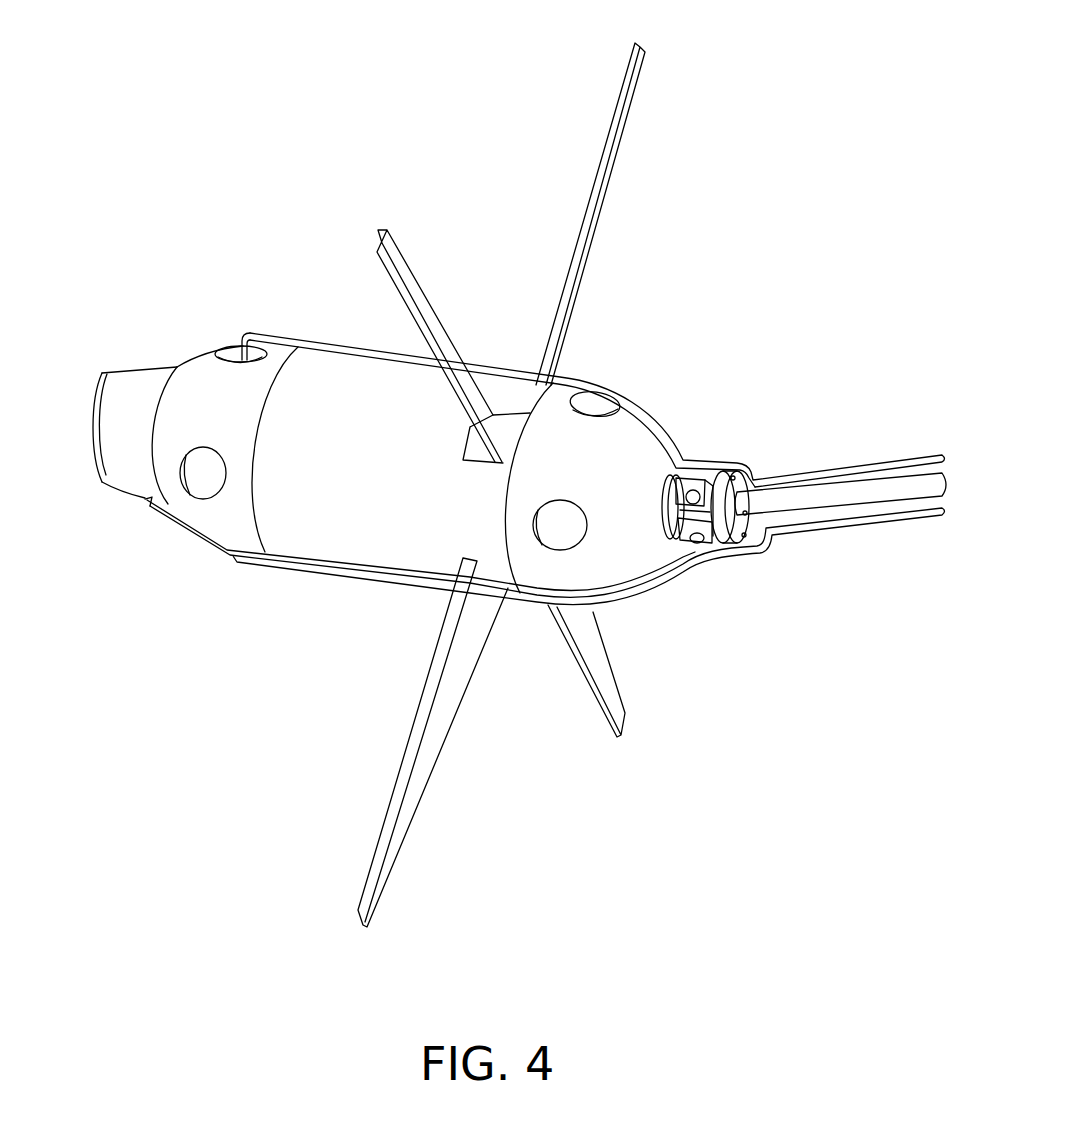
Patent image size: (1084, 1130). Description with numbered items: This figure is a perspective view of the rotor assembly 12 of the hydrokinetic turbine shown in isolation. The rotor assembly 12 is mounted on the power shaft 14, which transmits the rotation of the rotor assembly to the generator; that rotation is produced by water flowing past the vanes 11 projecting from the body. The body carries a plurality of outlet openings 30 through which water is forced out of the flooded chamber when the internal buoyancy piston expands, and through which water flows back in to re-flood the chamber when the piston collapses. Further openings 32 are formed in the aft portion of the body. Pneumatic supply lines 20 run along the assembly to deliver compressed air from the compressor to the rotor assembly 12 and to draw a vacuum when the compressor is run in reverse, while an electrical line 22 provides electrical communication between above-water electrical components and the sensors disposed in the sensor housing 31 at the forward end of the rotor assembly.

The rotor assembly 12 is at (457, 150).
The vanes 11 is at (427, 735).
The power shaft 14 is at (825, 493).
The pneumatic supply lines 20 is at (325, 345).
The electrical line 22 is at (252, 567).
The outlet openings 30 is at (233, 350).
The sensor housing 31 is at (133, 400).
The opening in aft body section 32 is at (597, 407).